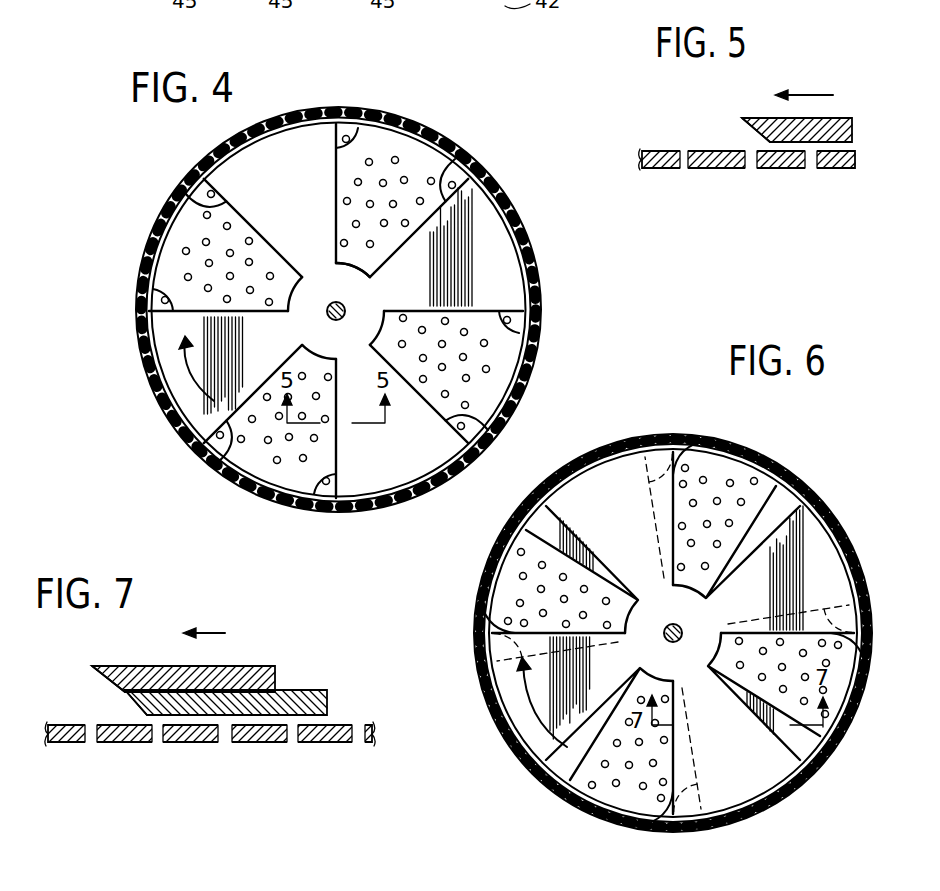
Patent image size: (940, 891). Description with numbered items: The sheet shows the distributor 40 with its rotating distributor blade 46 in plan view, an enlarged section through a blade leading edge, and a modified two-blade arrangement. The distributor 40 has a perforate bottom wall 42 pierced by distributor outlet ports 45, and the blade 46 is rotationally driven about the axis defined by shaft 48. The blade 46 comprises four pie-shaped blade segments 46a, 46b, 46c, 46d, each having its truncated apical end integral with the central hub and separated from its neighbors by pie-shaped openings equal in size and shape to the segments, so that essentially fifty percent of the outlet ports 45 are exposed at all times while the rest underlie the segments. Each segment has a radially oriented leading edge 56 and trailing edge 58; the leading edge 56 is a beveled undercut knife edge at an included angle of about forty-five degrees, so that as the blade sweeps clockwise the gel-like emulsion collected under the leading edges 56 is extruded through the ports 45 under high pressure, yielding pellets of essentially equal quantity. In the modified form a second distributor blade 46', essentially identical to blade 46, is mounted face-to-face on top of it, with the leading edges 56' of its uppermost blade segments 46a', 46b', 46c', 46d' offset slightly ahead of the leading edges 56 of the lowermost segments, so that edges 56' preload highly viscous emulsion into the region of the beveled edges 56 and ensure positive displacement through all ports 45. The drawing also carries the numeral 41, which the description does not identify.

In FIG. 4, the distributor 40 is at (449, 125).
In FIG. 6, the distributor 40 is at (672, 418).
In FIG. 4, the housing wall 41 is at (482, 172).
In FIG. 6, the housing wall 41 is at (660, 435).
In FIG. 4, the bottom wall 42 is at (522, 366).
In FIG. 5, the bottom wall 42 is at (720, 165).
In FIG. 7, the bottom wall 42 is at (322, 743).
In FIG. 6, the bottom wall 42 is at (720, 440).
In FIG. 4, the distributor outlet ports 45 is at (165, 255).
In FIG. 5, the distributor outlet ports 45 is at (740, 151).
In FIG. 7, the distributor outlet ports 45 is at (225, 744).
In FIG. 6, the distributor outlet ports 45 is at (722, 468).
In FIG. 4, the distributor blade 46 is at (379, 270).
In FIG. 6, the second distributor blade 46' is at (648, 596).
In FIG. 4, the blade segment 46a is at (476, 245).
In FIG. 6, the blade segment 46a is at (781, 517).
In FIG. 4, the blade segment 46b is at (402, 440).
In FIG. 5, the blade segment 46b is at (819, 98).
In FIG. 7, the blade segment 46b is at (256, 685).
In FIG. 6, the blade segment 46b is at (801, 717).
In FIG. 4, the blade segment 46c is at (195, 377).
In FIG. 6, the blade segment 46c is at (555, 730).
In FIG. 4, the blade segment 46d is at (248, 197).
In FIG. 6, the blade segment 46d is at (545, 553).
In FIG. 6, the uppermost blade segment 46a' is at (799, 548).
In FIG. 7, the uppermost blade segment 46b' is at (213, 657).
In FIG. 6, the uppermost blade segment 46b' is at (775, 747).
In FIG. 6, the uppermost blade segment 46c' is at (536, 690).
In FIG. 6, the uppermost blade segment 46d' is at (575, 518).
In FIG. 4, the shaft 48 is at (346, 308).
In FIG. 6, the shaft 48 is at (690, 630).
In FIG. 4, the leading edge 56 is at (336, 311).
In FIG. 5, the leading edge 56 is at (720, 110).
In FIG. 7, the leading edge 56 is at (89, 701).
In FIG. 6, the leading edge 56 is at (660, 630).
In FIG. 7, the leading edge of uppermost blade segments 56' is at (80, 657).
In FIG. 6, the leading edge of uppermost blade segments 56' is at (674, 610).
In FIG. 4, the trailing edge 58 is at (198, 200).